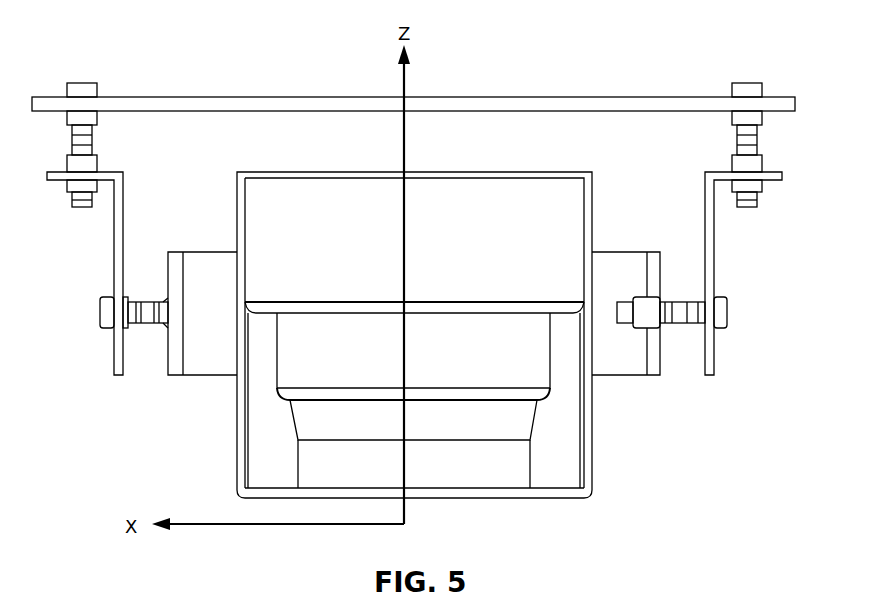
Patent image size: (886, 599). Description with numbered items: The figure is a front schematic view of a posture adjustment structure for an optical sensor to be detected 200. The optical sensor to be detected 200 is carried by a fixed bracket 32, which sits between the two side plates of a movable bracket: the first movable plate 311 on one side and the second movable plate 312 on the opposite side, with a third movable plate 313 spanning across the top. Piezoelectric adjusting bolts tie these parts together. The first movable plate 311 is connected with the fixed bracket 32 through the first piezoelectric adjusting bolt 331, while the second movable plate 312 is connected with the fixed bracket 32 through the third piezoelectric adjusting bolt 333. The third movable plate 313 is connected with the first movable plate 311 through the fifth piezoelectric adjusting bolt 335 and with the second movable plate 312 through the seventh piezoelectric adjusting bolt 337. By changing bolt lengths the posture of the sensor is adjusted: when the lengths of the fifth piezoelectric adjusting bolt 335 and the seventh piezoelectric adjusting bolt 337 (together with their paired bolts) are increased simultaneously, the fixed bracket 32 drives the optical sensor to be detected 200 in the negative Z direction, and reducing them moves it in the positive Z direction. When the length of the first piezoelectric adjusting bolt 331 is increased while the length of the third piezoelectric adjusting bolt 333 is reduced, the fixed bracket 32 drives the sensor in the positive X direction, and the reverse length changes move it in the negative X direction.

The third movable plate 313 is at (413, 69).
The seventh piezoelectric adjusting bolt 337 is at (61, 124).
The fifth piezoelectric adjusting bolt 335 is at (769, 122).
The second movable plate 312 is at (77, 273).
The first movable plate 311 is at (758, 273).
The optical sensor to be detected 200 is at (414, 307).
The third piezoelectric adjusting bolt 333 is at (105, 304).
The first piezoelectric adjusting bolt 331 is at (708, 297).
The fixed bracket 32 is at (454, 395).